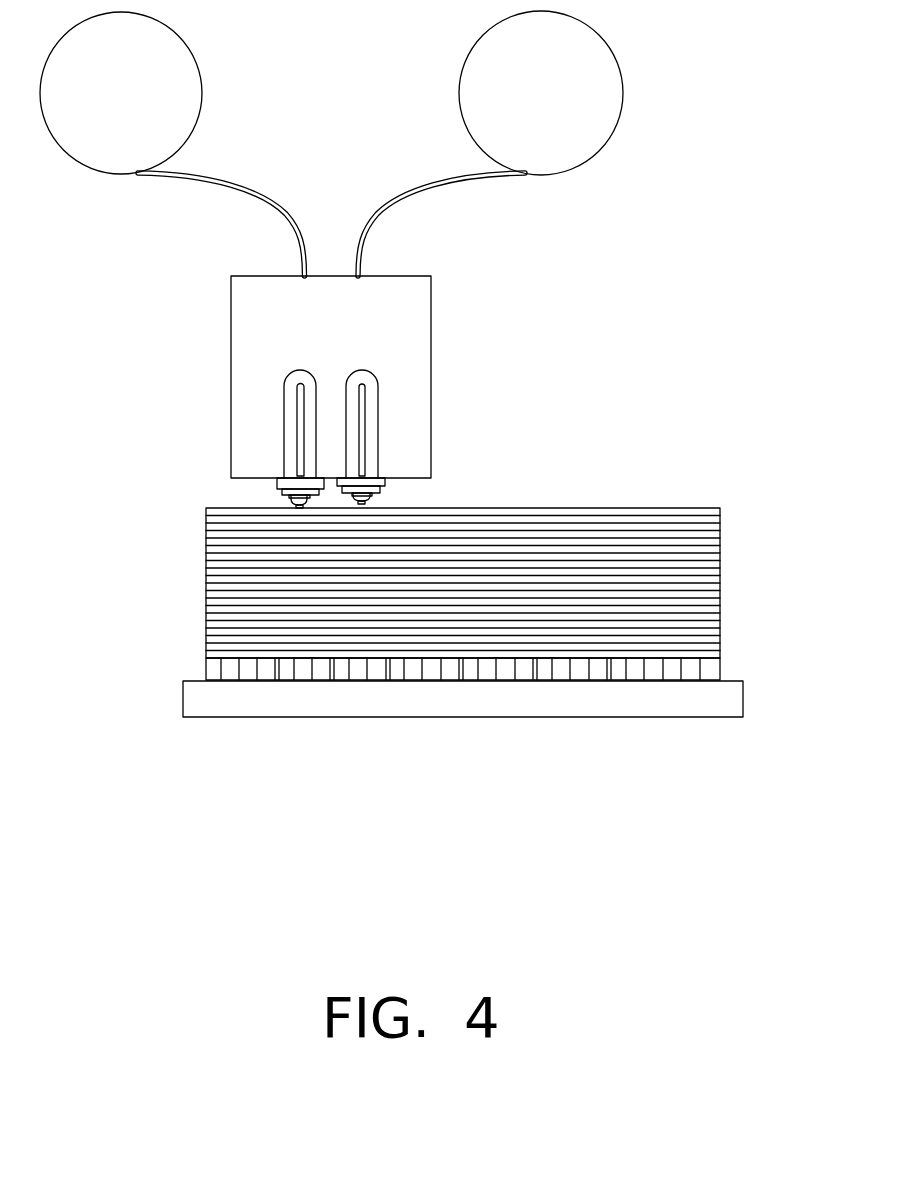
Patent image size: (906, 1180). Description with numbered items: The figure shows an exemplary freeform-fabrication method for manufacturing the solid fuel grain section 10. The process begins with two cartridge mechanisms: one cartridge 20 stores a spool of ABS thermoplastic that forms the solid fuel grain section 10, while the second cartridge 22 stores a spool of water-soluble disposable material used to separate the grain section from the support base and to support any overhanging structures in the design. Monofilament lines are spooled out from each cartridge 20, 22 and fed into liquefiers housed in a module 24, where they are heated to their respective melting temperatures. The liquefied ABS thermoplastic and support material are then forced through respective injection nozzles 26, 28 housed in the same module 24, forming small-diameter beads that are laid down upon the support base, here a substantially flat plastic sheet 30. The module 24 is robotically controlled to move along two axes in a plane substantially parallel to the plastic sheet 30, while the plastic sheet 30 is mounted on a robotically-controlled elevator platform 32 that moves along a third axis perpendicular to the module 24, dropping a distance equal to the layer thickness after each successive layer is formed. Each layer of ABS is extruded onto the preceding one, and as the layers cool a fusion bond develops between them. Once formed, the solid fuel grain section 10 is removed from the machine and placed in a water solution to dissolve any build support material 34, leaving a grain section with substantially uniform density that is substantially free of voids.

The solid fuel grain section 10 is at (652, 458).
The cartridge 20 is at (108, 105).
The second cartridge 22 is at (528, 105).
The module 24 is at (429, 305).
The injection nozzle 26 is at (280, 493).
The injection nozzle 28 is at (430, 488).
The plastic sheet 30 is at (723, 680).
The elevator platform 32 is at (192, 700).
The build support material 34 is at (208, 670).